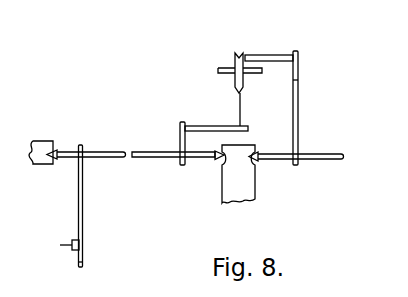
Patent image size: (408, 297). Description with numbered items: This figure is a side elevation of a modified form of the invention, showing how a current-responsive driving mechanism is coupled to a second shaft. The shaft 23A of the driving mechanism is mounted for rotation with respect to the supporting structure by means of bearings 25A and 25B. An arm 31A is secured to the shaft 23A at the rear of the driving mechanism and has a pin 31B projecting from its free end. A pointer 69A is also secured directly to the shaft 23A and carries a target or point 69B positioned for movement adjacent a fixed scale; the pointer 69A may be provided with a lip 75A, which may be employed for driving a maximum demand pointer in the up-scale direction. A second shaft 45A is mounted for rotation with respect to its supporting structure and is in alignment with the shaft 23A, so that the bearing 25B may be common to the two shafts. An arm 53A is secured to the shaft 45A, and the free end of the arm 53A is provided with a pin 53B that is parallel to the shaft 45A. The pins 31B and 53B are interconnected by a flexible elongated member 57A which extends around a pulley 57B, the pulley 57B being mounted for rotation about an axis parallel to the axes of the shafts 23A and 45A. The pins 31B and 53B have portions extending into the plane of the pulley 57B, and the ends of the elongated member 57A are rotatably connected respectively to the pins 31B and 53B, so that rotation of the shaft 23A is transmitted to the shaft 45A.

The bearing 25A is at (37, 141).
The shaft 23A is at (106, 158).
The pointer 69A is at (83, 222).
The target or point 69B is at (83, 263).
The lip 75A is at (53, 245).
The arm 31A is at (180, 140).
The pin 31B is at (215, 126).
The flexible elongated member 57A is at (241, 111).
The pulley 57B is at (235, 62).
The pin 53B is at (265, 54).
The arm 53A is at (298, 94).
The shaft 45A is at (327, 161).
The bearing 25B is at (257, 197).